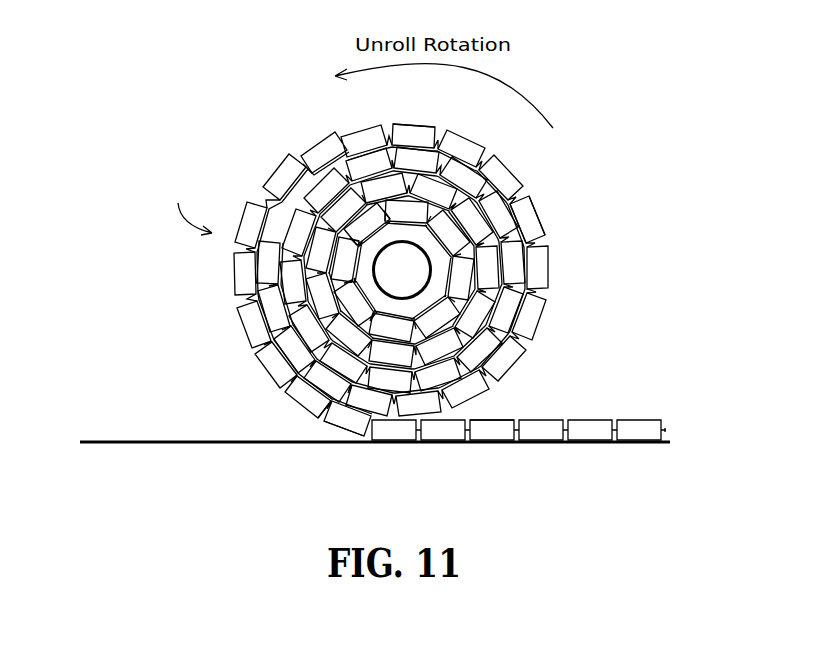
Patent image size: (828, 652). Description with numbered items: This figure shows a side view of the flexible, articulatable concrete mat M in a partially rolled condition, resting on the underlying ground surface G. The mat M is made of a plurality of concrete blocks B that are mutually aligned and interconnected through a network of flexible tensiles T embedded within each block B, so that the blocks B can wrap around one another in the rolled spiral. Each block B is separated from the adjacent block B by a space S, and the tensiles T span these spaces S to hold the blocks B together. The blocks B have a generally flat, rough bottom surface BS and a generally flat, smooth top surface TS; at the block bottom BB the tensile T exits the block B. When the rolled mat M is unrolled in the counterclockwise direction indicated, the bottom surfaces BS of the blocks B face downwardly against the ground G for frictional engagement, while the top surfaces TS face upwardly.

The concrete block B is at (287, 182).
The space S is at (290, 158).
The tensile T is at (260, 197).
The bottom surface BS is at (407, 125).
The block bottom BB is at (528, 215).
The top surface TS is at (500, 418).
The ground G is at (150, 440).
The concrete mat M is at (190, 207).